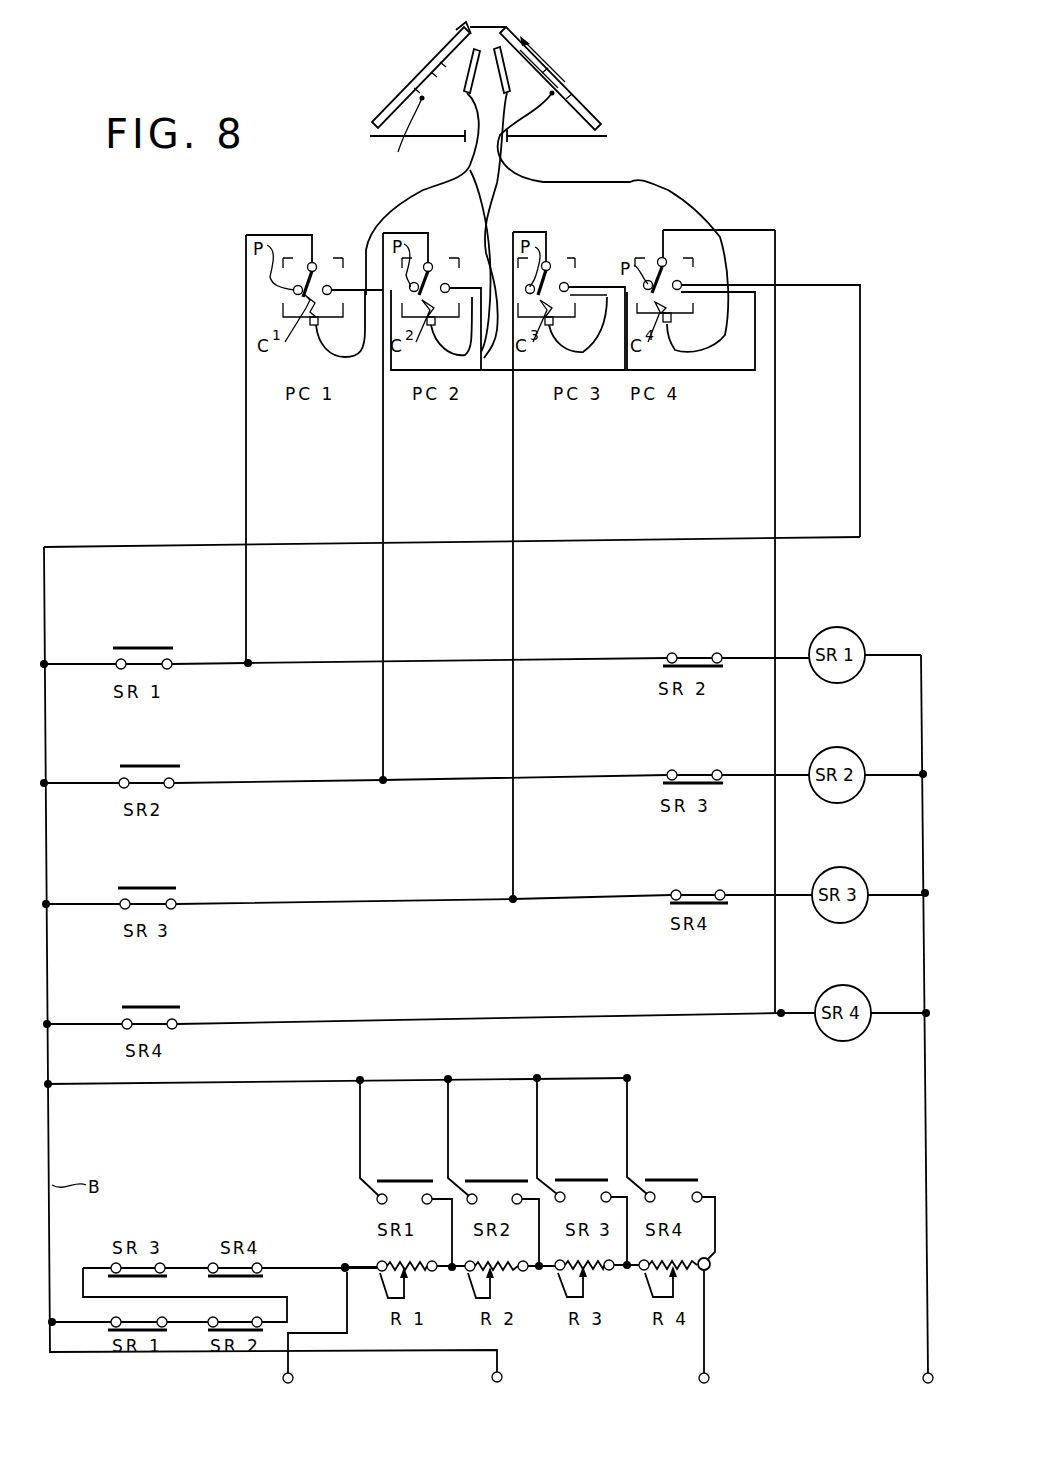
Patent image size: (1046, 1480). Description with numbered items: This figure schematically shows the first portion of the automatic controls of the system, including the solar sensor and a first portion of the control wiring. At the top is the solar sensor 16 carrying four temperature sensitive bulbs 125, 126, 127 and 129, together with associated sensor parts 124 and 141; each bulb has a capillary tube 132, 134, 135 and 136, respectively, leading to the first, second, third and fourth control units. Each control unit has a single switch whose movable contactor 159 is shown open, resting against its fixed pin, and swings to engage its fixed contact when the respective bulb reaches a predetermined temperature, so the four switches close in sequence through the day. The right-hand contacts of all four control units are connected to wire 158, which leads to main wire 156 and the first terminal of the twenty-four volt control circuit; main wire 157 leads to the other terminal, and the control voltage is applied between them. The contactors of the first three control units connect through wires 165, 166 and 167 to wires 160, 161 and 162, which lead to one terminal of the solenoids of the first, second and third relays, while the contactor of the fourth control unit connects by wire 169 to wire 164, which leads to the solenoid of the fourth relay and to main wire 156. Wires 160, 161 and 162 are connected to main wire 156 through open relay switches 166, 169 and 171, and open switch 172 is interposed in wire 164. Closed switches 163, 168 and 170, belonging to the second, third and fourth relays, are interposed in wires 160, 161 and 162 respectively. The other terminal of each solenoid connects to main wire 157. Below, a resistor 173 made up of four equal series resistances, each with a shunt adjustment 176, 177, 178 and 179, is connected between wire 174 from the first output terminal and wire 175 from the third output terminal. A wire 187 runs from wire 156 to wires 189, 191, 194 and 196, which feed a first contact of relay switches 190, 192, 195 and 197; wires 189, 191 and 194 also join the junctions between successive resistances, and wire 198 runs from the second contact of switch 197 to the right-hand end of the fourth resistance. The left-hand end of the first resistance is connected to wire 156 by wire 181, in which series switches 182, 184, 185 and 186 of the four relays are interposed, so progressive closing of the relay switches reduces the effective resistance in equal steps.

The level sensing assembly 16 is at (530, 44).
The right electrode bar 124 is at (592, 116).
The temperature sensitive bulb 125 is at (415, 82).
The temperature sensitive bulb 126 is at (422, 128).
The temperature sensitive bulb 127 is at (466, 137).
The temperature sensitive bulb 129 is at (573, 82).
The capillary tube 132 is at (372, 224).
The capillary tube 134 is at (470, 160).
The capillary tube 135 is at (500, 160).
The capillary tube 136 is at (630, 183).
The contact tip 141 is at (462, 30).
The main wire 156 is at (98, 547).
The main wire 157 is at (921, 1105).
The wire 158 is at (467, 373).
The movable contactor 159 is at (664, 258).
The wire 160 is at (430, 660).
The wire 161 is at (412, 780).
The wire 162 is at (400, 900).
The switch 163 is at (694, 664).
The wire 164 is at (487, 1018).
The wire 165 is at (246, 465).
The wire / switch 166 is at (383, 483).
The wire 167 is at (513, 478).
The switch 168 is at (692, 780).
The wire / switch 169 is at (775, 475).
The switch 170 is at (696, 900).
The switch 171 is at (156, 889).
The switch 172 is at (158, 1007).
The resistor 173 is at (722, 1250).
The wire 174 is at (347, 1308).
The wire 175 is at (704, 1308).
The shunt adjustment 176 is at (407, 1280).
The shunt adjustment 177 is at (493, 1280).
The shunt adjustment 178 is at (586, 1280).
The shunt adjustment 179 is at (676, 1280).
The wire 181 is at (345, 1280).
The switch 182 is at (143, 1316).
The switch 184 is at (230, 1322).
The switch 185 is at (127, 1276).
The switch 186 is at (246, 1272).
The wire 187 is at (280, 1082).
The wire 189 is at (360, 1120).
The switch 190 is at (397, 1179).
The wire 191 is at (448, 1108).
The switch 192 is at (488, 1179).
The wire 194 is at (541, 1107).
The switch 195 is at (575, 1178).
The wire 196 is at (630, 1107).
The switch 197 is at (680, 1178).
The wire 198 is at (715, 1218).